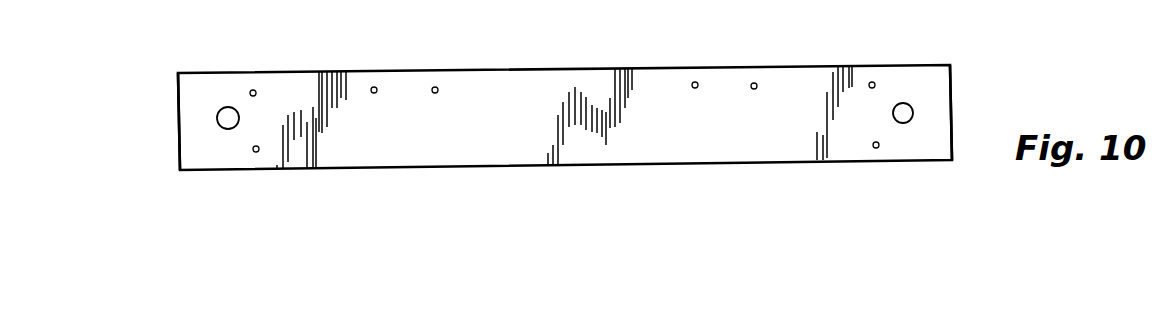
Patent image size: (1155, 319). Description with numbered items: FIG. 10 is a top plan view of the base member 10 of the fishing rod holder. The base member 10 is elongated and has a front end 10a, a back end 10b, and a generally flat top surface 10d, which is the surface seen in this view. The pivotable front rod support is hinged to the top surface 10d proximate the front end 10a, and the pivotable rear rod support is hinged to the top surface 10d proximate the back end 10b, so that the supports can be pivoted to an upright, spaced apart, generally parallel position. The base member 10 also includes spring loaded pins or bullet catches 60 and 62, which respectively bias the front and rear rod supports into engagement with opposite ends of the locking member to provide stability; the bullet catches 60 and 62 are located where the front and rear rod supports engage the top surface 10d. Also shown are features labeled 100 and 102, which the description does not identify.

The base member 10 is at (218, 199).
The front end 10a is at (952, 80).
The back end 10b is at (178, 122).
The top surface 10d is at (588, 145).
The bullet catch 60 is at (905, 103).
The bullet catch 62 is at (225, 108).
The fastener hole 100 is at (901, 123).
The hatched section 102 is at (298, 145).